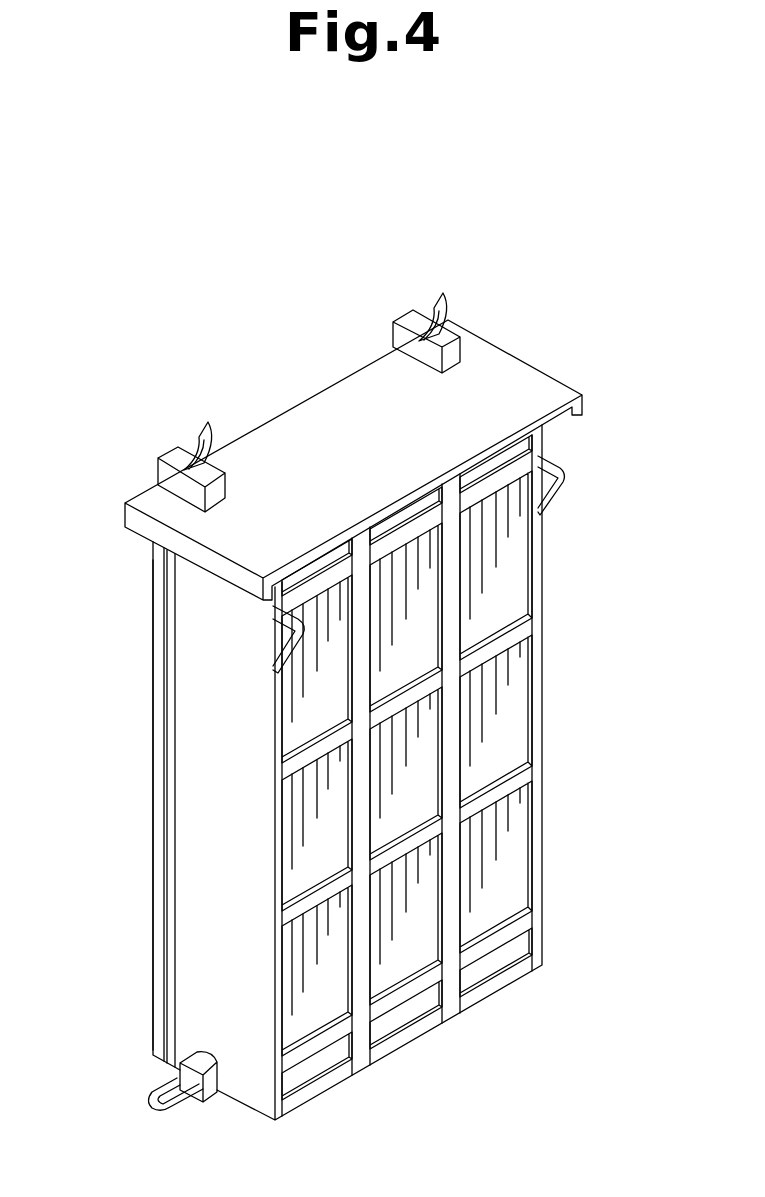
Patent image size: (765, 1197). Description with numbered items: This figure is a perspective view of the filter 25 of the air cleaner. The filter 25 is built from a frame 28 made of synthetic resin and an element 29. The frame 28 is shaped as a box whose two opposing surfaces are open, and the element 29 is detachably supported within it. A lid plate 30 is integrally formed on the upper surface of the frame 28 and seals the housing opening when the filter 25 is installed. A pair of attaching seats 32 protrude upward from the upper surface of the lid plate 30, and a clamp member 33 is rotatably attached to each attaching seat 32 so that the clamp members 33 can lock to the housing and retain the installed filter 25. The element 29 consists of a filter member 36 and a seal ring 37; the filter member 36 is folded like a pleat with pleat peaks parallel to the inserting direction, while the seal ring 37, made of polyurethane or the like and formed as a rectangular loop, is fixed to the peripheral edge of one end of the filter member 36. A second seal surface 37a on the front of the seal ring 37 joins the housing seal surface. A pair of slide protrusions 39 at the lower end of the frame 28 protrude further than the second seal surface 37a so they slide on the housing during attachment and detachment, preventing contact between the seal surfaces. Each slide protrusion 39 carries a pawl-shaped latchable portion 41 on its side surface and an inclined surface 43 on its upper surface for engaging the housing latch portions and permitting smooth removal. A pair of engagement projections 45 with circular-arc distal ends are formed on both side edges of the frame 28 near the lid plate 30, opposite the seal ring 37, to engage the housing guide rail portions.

The filter 25 is at (153, 673).
The frame 28 is at (187, 808).
The element 29 is at (523, 565).
The lid plate 30 is at (287, 407).
The attaching seat 32 is at (416, 316).
The clamp member 33 is at (202, 423).
The filter member 36 is at (523, 678).
The seal ring 37 is at (160, 865).
The second seal surface 37a is at (153, 940).
The slide protrusion 39 is at (185, 1100).
The latchable portion 41 is at (168, 1105).
The inclined surface 43 is at (160, 1082).
The engagement projection 45 is at (276, 632).